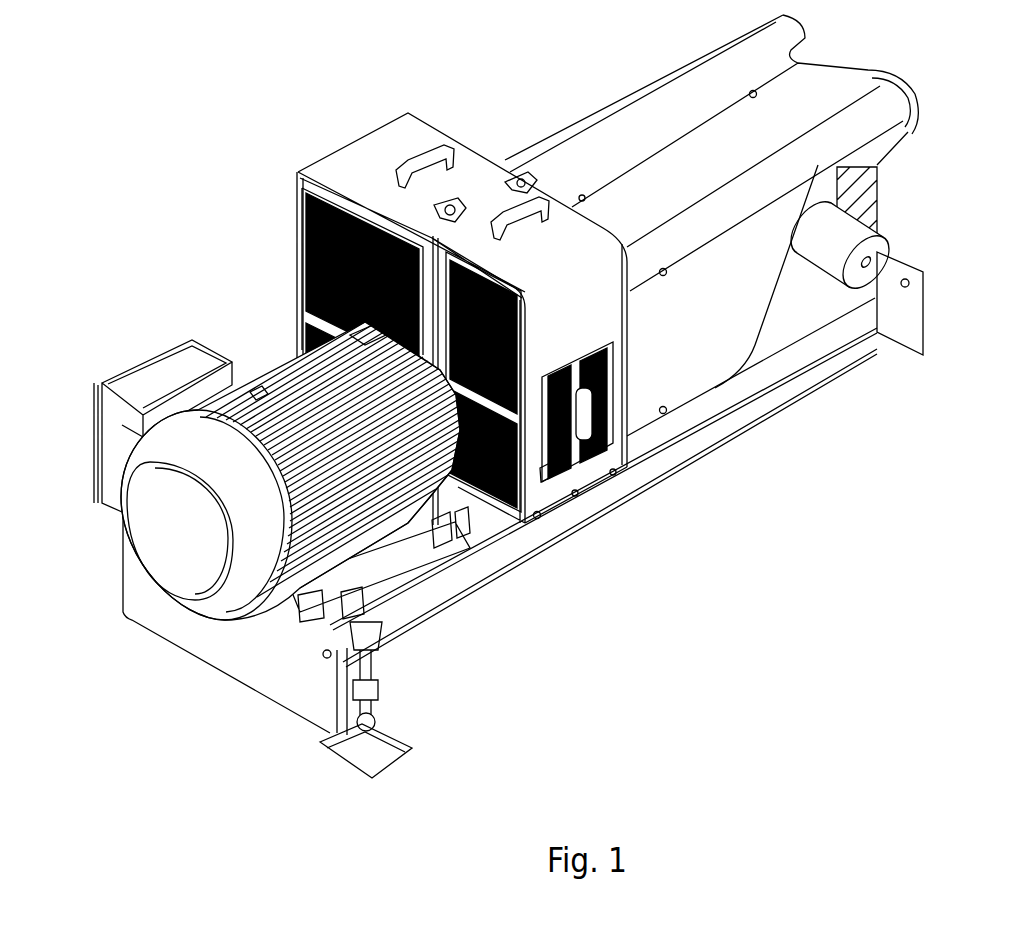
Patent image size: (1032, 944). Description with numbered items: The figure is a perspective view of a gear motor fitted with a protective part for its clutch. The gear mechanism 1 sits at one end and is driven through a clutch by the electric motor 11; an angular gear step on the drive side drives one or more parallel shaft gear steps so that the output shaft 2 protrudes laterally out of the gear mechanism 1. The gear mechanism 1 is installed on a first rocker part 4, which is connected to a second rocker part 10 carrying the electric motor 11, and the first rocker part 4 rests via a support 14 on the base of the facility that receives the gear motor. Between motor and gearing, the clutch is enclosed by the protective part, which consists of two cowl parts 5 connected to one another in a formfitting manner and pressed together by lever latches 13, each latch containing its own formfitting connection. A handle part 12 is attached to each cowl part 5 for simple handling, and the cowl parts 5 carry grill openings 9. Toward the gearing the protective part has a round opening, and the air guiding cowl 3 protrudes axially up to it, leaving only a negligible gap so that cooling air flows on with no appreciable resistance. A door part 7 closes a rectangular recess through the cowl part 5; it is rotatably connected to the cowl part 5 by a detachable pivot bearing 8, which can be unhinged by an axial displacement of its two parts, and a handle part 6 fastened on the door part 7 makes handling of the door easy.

The gear mechanism 1 is at (857, 183).
The output shaft 2 is at (833, 257).
The air guiding cowl 3 is at (815, 108).
The first rocker part 4 is at (785, 390).
The cowl part 5 is at (384, 158).
The handle part 6 is at (610, 343).
The door part 7 is at (587, 412).
The detachable pivot bearing 8 is at (545, 473).
The grill openings 9 is at (537, 515).
The second rocker part 10 is at (478, 533).
The electric motor 11 is at (302, 382).
The handle part 12 is at (425, 155).
The lever latch 13 is at (447, 203).
The support 14 is at (368, 705).